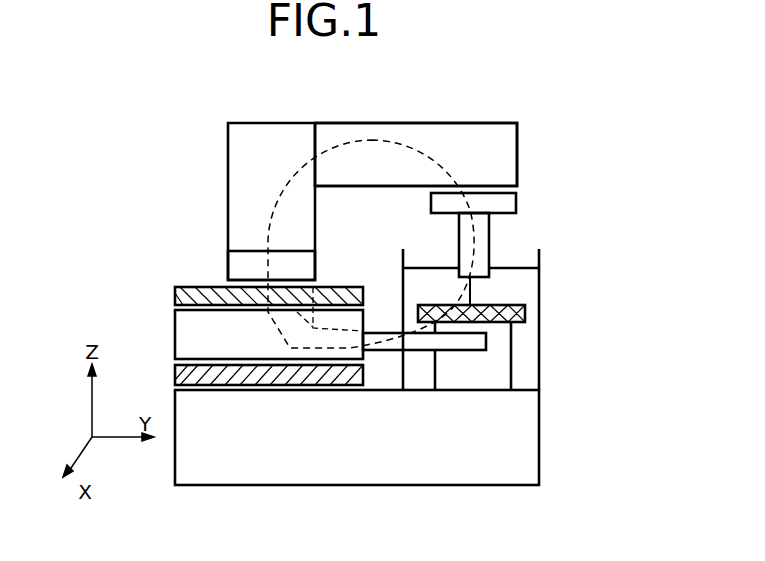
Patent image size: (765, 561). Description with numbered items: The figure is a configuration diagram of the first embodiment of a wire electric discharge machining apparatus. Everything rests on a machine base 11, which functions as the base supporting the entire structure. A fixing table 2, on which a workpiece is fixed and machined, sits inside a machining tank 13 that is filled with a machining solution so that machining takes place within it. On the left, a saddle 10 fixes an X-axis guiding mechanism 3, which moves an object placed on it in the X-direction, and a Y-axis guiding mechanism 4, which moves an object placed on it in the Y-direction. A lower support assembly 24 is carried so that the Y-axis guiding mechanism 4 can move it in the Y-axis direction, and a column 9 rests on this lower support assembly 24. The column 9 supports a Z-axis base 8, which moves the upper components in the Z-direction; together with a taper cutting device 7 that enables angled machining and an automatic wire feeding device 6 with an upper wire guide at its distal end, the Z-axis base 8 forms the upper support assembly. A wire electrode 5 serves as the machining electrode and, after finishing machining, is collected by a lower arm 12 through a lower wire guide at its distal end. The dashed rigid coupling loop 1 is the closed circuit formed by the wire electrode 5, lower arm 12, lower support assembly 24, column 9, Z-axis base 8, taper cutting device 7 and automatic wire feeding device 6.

The rigid coupling loop 1 is at (423, 150).
The fixing table 2 is at (525, 310).
The X-axis guiding mechanism 3 is at (175, 373).
The Y-axis guiding mechanism 4 is at (175, 290).
The wire electrode 5 is at (470, 292).
The automatic wire feeding device 6 is at (489, 237).
The taper cutting device 7 is at (516, 197).
The Z-axis base 8 is at (517, 133).
The column 9 is at (228, 138).
The saddle 10 is at (175, 328).
The machine base 11 is at (539, 422).
The lower arm 12 is at (486, 340).
The machining tank 13 is at (539, 280).
The lower support assembly 24 is at (228, 262).